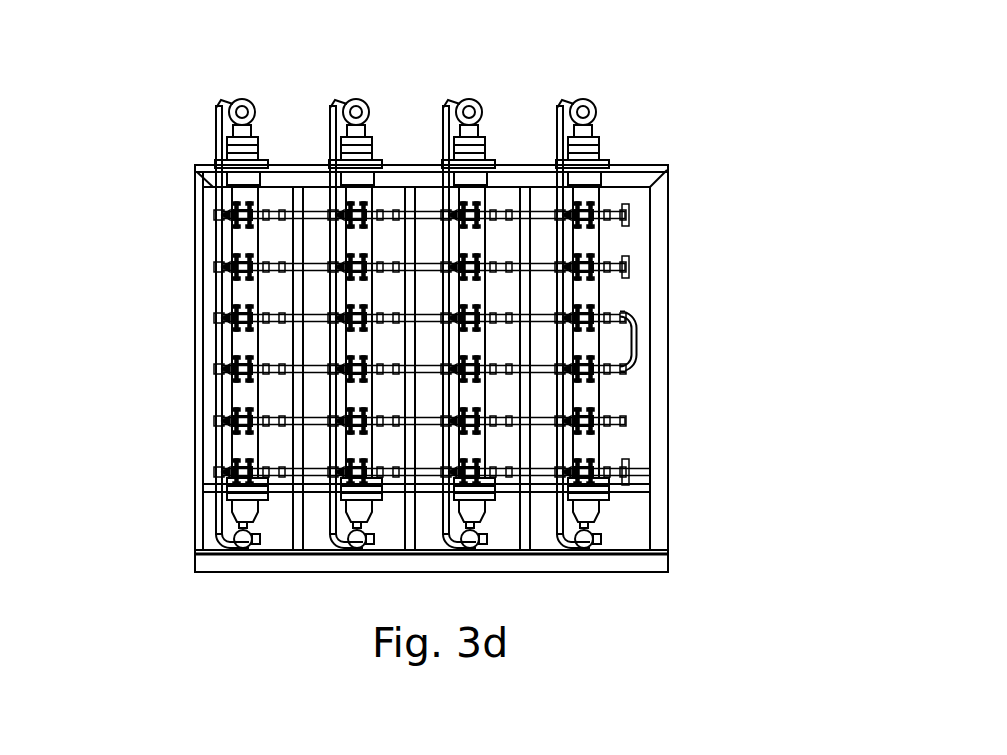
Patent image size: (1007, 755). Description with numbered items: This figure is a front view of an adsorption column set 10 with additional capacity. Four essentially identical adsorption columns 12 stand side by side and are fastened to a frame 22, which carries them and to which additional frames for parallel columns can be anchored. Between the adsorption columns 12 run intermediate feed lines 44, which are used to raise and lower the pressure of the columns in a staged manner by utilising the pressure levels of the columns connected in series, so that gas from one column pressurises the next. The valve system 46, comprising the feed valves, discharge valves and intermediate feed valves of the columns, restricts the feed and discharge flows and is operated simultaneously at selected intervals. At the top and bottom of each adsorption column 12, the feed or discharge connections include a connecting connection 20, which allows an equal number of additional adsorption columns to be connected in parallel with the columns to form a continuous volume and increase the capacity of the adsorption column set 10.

The adsorption column set 10 is at (567, 54).
The adsorption column 12 is at (365, 246).
The connecting connection 20 is at (455, 84).
The frame 22 is at (592, 563).
The intermediate feed line 44 is at (288, 320).
The valve system 46 is at (177, 321).